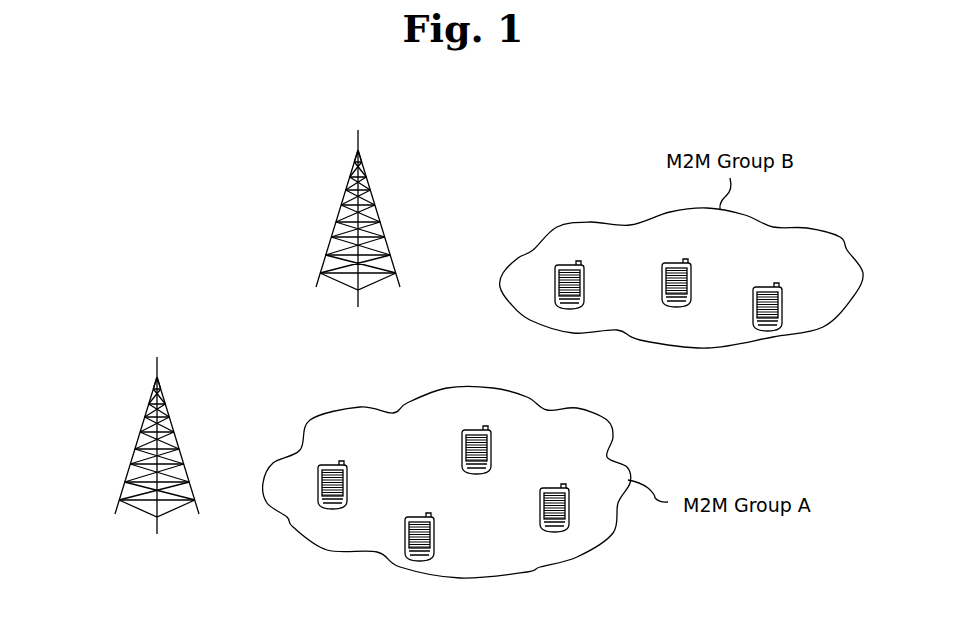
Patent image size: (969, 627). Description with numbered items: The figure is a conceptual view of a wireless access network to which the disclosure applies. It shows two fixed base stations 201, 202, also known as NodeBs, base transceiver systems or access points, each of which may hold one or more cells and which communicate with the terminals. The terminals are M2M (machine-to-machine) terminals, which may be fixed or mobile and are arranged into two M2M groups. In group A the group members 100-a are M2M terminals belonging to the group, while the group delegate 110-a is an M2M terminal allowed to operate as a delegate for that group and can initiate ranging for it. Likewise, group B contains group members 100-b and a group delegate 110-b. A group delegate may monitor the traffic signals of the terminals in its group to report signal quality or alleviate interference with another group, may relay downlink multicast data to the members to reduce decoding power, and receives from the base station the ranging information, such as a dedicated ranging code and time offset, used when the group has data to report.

The base station 201 is at (157, 359).
The base station 202 is at (358, 132).
The group member 100-a is at (487, 428).
The group delegate 110-a is at (344, 462).
The group member 100-b is at (686, 259).
The group delegate 110-b is at (579, 261).